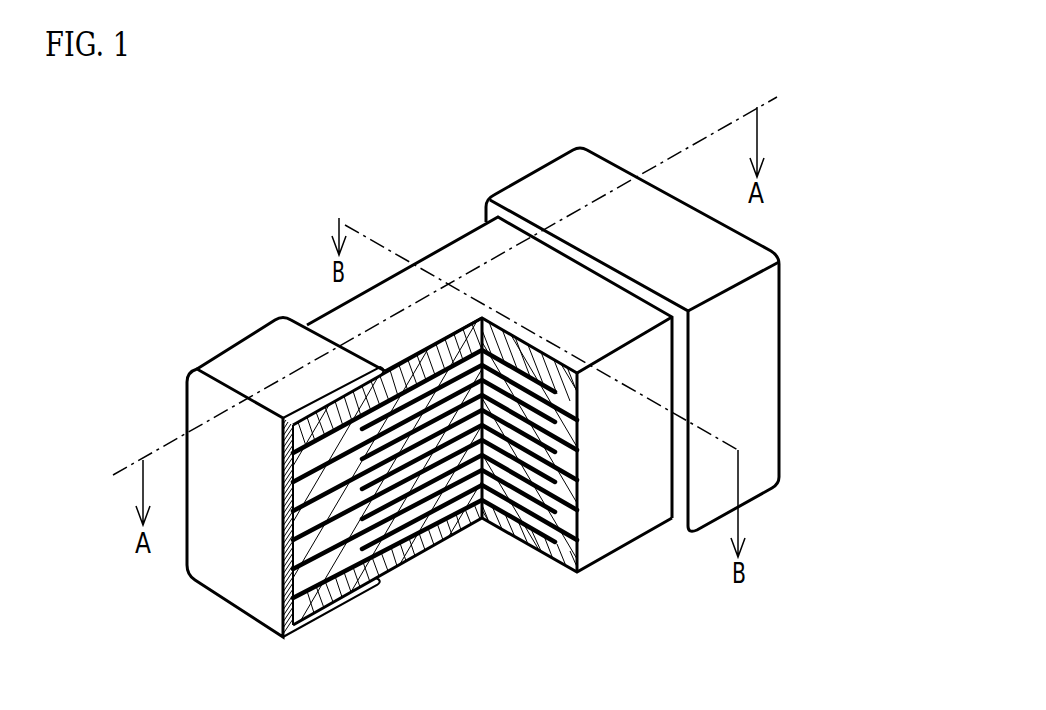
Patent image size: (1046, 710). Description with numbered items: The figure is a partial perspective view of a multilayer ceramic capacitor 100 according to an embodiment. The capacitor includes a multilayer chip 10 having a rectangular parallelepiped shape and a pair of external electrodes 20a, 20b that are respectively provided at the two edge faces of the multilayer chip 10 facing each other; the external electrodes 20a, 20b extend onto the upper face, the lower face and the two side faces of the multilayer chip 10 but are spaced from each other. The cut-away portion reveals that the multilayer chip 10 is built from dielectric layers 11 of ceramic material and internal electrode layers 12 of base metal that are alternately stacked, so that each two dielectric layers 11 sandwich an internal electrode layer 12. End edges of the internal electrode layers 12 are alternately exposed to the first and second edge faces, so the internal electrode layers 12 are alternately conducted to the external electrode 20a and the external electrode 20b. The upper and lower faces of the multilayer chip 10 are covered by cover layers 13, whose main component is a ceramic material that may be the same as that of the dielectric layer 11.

The multilayer ceramic capacitor 100 is at (880, 81).
The multilayer chip 10 is at (326, 315).
The dielectric layer 11 is at (403, 528).
The internal electrode layer 12 is at (455, 537).
The cover layer 13 is at (455, 258).
The external electrode 20a is at (217, 352).
The external electrode 20b is at (538, 188).